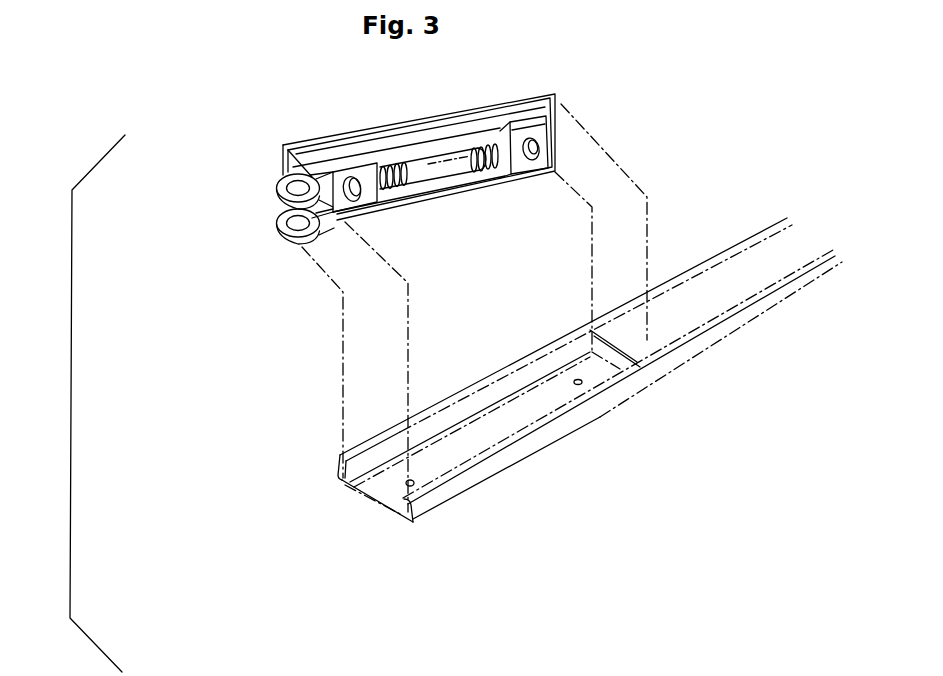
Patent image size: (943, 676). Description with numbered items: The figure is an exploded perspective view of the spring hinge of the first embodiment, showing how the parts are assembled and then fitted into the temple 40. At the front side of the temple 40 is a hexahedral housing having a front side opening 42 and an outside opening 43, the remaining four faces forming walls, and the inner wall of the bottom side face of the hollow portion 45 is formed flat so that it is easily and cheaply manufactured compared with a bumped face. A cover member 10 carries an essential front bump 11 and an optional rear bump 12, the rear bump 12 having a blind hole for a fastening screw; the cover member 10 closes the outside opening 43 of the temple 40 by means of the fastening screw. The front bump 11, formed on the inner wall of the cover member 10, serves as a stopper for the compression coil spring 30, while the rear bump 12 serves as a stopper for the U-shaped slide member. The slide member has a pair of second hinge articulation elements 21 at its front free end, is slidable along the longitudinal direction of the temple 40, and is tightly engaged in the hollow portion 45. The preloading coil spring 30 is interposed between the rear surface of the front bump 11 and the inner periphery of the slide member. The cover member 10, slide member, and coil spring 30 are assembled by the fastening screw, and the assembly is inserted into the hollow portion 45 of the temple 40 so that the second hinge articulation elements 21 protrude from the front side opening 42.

The cover member 10 is at (413, 118).
The front bump 11 is at (353, 163).
The rear bump 12 is at (518, 135).
The second hinge articulation element 21 is at (278, 190).
The coil spring 30 is at (433, 173).
The temple 40 is at (545, 407).
The front side opening 42 is at (377, 485).
The outside opening 43 is at (445, 457).
The hollow portion 45 is at (512, 410).